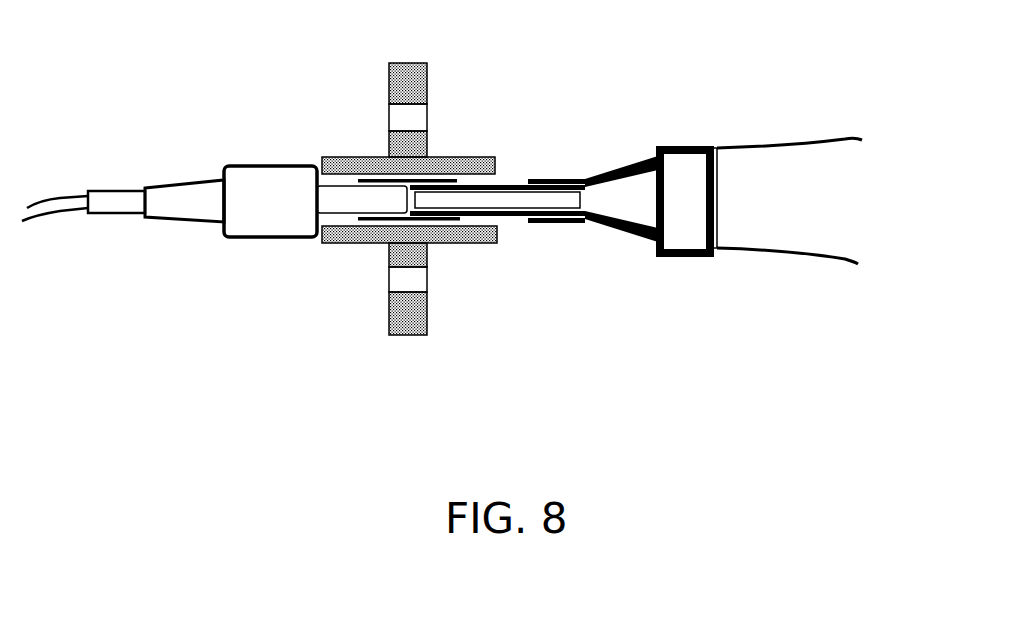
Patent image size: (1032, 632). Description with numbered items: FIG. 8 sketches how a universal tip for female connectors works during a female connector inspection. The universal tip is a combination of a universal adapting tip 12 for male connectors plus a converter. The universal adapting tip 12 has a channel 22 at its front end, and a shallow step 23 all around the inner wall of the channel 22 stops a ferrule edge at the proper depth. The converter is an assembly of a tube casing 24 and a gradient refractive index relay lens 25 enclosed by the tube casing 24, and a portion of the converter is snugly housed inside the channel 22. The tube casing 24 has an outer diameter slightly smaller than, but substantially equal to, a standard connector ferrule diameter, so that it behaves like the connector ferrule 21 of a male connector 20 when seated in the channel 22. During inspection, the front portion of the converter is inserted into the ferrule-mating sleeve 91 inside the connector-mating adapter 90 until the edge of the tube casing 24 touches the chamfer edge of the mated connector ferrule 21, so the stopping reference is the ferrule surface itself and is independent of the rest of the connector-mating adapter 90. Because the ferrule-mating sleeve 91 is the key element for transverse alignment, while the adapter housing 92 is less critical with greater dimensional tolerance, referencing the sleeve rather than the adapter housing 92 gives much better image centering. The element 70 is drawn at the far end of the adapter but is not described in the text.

The universal adapting tip 12 is at (692, 238).
The male connector 20 is at (207, 233).
The connector ferrule 21 is at (333, 193).
The channel 22 is at (548, 178).
The shallow step 23 is at (588, 186).
The tube casing 24 is at (500, 215).
The gradient refractive index (GRIN) relay lens 25 is at (492, 200).
The laser submount / base 70 is at (792, 243).
The connector-mating adapter 90 is at (452, 262).
The ferrule-mating sleeve 91 is at (377, 180).
The adapter housing 92 is at (372, 243).